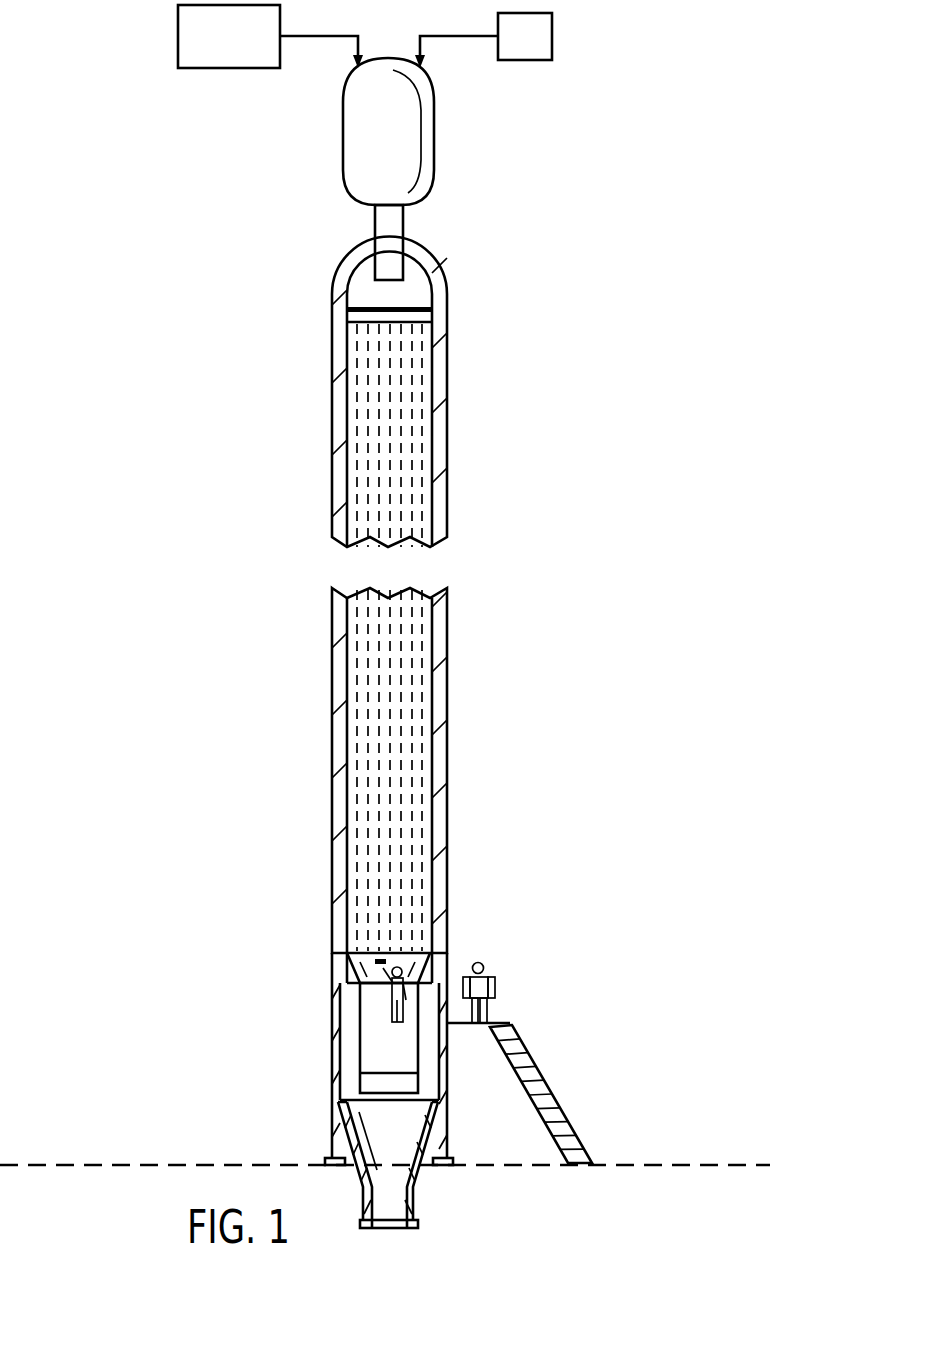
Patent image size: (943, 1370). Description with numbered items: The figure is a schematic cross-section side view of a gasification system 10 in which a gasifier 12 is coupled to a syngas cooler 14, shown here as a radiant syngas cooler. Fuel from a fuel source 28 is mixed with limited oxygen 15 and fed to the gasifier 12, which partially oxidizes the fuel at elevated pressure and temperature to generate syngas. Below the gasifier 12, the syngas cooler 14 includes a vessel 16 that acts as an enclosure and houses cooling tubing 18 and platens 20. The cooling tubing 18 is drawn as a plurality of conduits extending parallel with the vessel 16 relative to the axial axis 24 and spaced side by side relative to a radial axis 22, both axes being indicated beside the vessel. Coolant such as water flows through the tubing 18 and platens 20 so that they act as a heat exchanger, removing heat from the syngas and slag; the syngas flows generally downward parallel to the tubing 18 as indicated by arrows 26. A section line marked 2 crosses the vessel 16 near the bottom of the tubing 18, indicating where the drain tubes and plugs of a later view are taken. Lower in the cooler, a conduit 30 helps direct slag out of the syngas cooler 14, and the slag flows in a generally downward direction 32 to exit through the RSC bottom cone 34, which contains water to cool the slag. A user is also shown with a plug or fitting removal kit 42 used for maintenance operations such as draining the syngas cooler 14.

The gasification system 10 is at (628, 146).
The gasifier 12 is at (434, 116).
The syngas cooler 14 is at (440, 242).
The oxygen 15 is at (552, 38).
The vessel 16 is at (440, 383).
The cooling tubing 18 is at (372, 498).
The platens 20 is at (357, 365).
The radial axis 22 is at (703, 910).
The axial axis 24 is at (648, 845).
The arrows 26 is at (308, 588).
The fuel source 28 is at (178, 38).
The section line 2- 2 is at (477, 955).
The conduit 30 is at (377, 1005).
The downward direction 32 is at (388, 1240).
The RSC bottom cone 34 is at (415, 1180).
The plug or fitting removal kit 42 is at (381, 994).